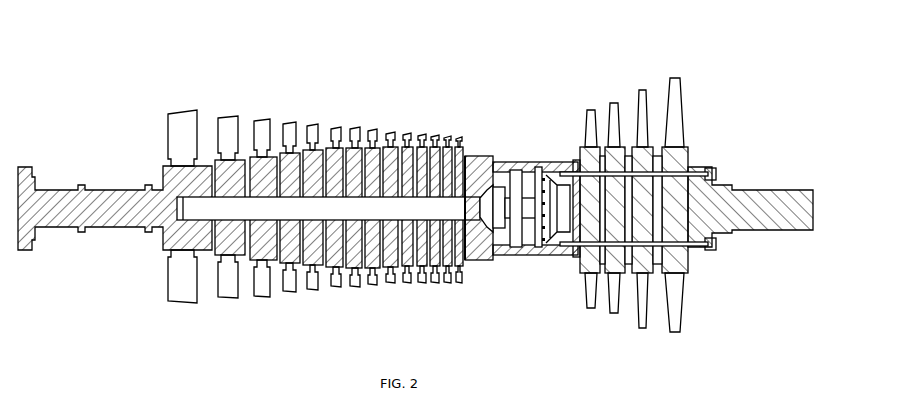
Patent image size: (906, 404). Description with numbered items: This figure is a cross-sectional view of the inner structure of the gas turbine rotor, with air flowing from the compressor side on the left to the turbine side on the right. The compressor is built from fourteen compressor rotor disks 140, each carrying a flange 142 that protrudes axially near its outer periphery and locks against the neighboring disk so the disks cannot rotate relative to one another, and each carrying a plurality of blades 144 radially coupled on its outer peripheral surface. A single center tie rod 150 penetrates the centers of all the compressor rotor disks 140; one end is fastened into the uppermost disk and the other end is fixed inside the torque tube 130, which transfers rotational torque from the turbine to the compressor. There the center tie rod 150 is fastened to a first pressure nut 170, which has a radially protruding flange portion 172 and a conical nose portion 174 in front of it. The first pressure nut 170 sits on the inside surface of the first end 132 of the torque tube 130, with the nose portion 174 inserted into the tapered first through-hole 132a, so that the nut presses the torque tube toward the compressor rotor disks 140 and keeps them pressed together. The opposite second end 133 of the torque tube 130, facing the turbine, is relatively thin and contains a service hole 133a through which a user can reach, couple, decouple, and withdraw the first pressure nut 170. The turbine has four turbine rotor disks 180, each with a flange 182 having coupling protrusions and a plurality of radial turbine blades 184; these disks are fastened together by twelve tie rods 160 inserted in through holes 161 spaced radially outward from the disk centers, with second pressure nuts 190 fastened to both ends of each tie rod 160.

The torque tube 130 is at (505, 158).
The first end 132 is at (478, 160).
The first through-hole 132a is at (468, 158).
The second end 133 is at (563, 163).
The service hole 133a is at (542, 253).
The compressor rotor disk 140 is at (217, 167).
The flange 142 is at (195, 168).
The blades 144 is at (223, 123).
The center tie rod 150 is at (163, 237).
The tie rods 160 is at (697, 172).
The through holes 161 is at (683, 170).
The first pressure nut 170 is at (480, 270).
The flange portion 172 is at (457, 287).
The conical nose portion 174 is at (400, 283).
The turbine rotor disk 180 is at (698, 150).
The flange 182 is at (658, 153).
The turbine blades 184 is at (678, 105).
The second pressure nuts 190 is at (538, 167).